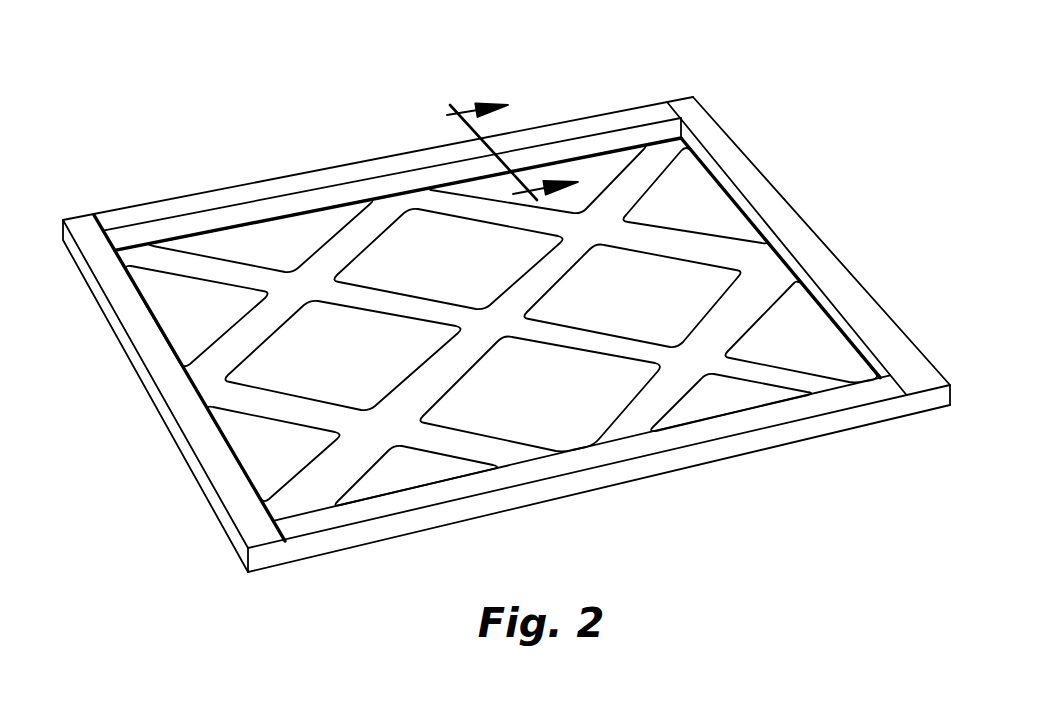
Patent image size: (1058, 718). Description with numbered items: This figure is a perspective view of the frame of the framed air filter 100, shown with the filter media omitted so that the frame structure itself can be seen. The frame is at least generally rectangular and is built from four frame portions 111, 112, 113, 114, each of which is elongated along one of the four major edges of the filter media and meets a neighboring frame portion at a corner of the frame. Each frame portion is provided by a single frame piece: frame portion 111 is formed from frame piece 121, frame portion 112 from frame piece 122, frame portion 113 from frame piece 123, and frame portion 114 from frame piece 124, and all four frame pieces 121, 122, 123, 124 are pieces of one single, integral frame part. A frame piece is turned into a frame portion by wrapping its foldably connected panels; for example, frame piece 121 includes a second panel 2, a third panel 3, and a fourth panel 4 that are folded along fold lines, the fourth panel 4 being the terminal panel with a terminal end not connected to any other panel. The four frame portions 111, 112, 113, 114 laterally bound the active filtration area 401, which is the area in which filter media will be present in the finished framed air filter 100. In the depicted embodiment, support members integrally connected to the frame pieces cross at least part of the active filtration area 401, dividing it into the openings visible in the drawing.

The framed air filter 100 is at (506, 330).
The second panel 2 is at (506, 352).
The third panel 3 is at (378, 172).
The fourth panel 4 is at (501, 326).
The active filtration area 401 is at (430, 276).
The frame portion 111 is at (378, 172).
The frame portion 112 is at (808, 251).
The frame portion 113 is at (599, 473).
The frame portion 114 is at (174, 393).
The frame piece 121 is at (298, 173).
The frame piece 122 is at (832, 247).
The frame piece 123 is at (695, 456).
The frame piece 124 is at (226, 518).